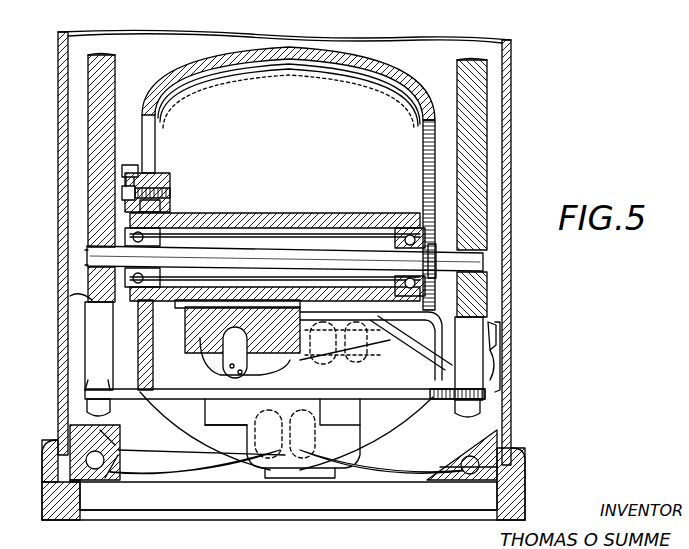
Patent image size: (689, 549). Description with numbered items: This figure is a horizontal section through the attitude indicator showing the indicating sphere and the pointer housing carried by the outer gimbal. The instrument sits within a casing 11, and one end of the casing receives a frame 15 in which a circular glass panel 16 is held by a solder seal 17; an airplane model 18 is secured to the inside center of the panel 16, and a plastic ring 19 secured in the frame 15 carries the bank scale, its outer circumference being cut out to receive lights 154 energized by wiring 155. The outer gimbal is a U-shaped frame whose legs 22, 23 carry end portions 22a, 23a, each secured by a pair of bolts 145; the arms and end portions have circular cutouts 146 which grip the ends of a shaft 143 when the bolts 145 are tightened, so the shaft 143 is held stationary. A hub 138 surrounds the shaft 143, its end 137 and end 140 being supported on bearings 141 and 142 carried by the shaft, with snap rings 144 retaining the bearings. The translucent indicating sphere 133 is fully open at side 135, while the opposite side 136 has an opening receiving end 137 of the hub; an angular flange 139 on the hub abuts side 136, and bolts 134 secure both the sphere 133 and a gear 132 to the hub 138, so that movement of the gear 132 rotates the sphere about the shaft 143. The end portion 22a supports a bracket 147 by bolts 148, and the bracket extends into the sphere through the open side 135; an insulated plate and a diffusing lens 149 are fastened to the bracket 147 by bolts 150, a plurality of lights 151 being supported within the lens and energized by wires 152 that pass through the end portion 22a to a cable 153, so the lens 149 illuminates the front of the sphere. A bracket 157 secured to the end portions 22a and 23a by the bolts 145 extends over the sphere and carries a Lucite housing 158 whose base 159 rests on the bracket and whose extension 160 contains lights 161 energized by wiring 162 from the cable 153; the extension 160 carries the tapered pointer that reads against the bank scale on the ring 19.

The casing 11 is at (58, 238).
The frame 15 is at (520, 488).
The glass panel 16 is at (200, 495).
The solder seal 17 is at (82, 496).
The airplane model 18 is at (250, 480).
The plastic ring 19 is at (515, 424).
The leg of outer gimbal 22 is at (462, 75).
The end portion of outer gimbal arm 22a is at (490, 298).
The leg of outer gimbal 23 is at (110, 75).
The end portion of outer gimbal arm 23a is at (85, 320).
The gear 132 is at (126, 170).
The indicating sphere 133 is at (300, 64).
The bolts 134 is at (165, 192).
The open side of sphere 135 is at (424, 165).
The side of sphere 136 is at (150, 155).
The end of hub 137 is at (165, 206).
The hub 138 is at (288, 204).
The angular flange 139 is at (160, 182).
The end of hub 140 is at (392, 212).
The bearing 141 is at (145, 238).
The bearing 142 is at (402, 241).
The shaft 143 is at (310, 258).
The snap rings 144 is at (434, 246).
The bolts 145 is at (105, 410).
The circular cutouts 146 is at (92, 262).
The bracket 147 is at (430, 318).
The bolts 148 is at (262, 340).
The diffusing lens 149 is at (372, 370).
The bolts 150 is at (220, 394).
The lights 151 is at (220, 352).
The wires 152 is at (400, 335).
The cable 153 is at (498, 340).
The lights 154 is at (462, 458).
The wiring 155 is at (498, 450).
The bracket 157 is at (85, 393).
The Lucite housing 158 is at (240, 440).
The base 159 is at (282, 433).
The extension 160 is at (340, 440).
The lights 161 is at (308, 420).
The wiring 162 is at (395, 450).